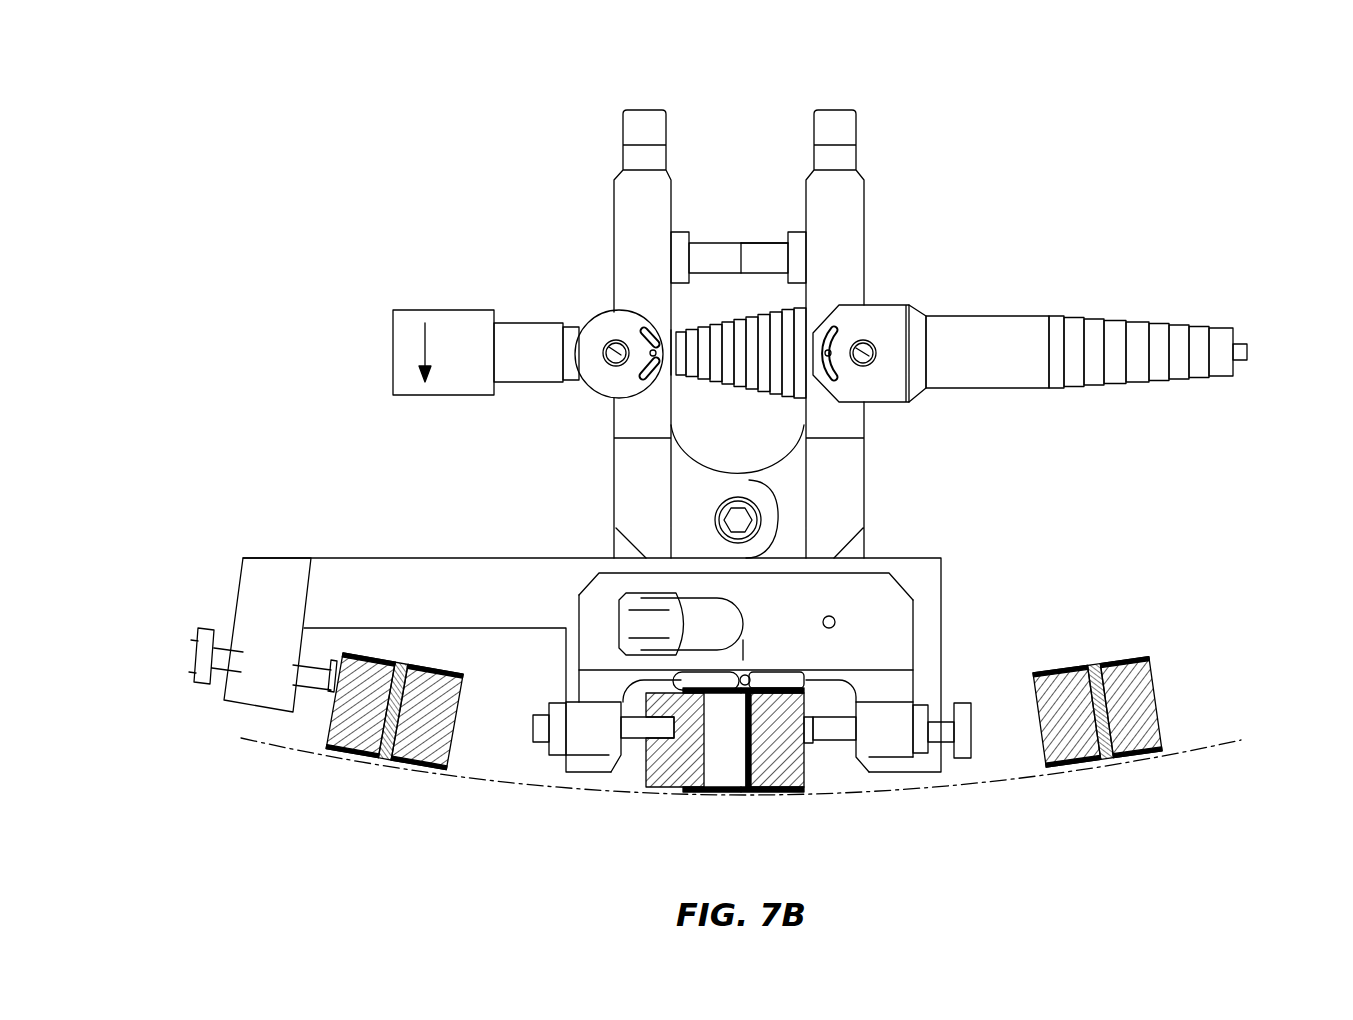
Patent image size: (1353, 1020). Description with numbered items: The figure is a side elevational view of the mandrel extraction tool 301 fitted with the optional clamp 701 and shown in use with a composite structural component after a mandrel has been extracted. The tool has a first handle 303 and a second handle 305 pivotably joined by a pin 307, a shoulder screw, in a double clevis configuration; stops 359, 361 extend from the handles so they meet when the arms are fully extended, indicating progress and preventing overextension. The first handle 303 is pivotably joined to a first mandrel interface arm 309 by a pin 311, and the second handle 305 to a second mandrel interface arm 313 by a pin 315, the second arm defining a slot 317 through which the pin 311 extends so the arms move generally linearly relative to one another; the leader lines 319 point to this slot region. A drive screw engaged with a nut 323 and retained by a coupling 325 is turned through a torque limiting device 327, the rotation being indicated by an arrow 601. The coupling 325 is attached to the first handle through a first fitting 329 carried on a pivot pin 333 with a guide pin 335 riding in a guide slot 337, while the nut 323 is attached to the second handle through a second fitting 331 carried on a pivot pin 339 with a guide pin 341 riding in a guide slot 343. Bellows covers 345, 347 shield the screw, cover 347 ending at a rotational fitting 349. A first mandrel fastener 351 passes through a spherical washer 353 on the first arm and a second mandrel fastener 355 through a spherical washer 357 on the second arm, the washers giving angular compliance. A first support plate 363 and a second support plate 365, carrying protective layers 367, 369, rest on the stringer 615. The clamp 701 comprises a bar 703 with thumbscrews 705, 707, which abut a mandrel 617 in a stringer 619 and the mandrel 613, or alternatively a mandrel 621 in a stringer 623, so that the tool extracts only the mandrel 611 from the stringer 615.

The mandrel extraction tool 301 is at (1112, 130).
The first handle 303 is at (630, 200).
The second handle 305 is at (850, 185).
The pin 307 is at (745, 527).
The first mandrel interface arm 309 is at (563, 628).
The pin 311 is at (642, 618).
The second mandrel interface arm 313 is at (902, 643).
The pin 315 is at (834, 622).
The slot 317 is at (705, 597).
The slot end 319 is at (640, 590).
The nut 323 is at (995, 330).
The coupling 325 is at (507, 330).
The torque limiting device 327 is at (403, 367).
The first fitting 329 is at (588, 380).
The second fitting 331 is at (878, 390).
The pivot pin 333 is at (606, 343).
The guide pin 335 is at (664, 330).
The guide slot 337 is at (642, 332).
The pivot pin 339 is at (872, 345).
The guide pin 341 is at (792, 378).
The guide slot 343 is at (868, 343).
The cover 345 is at (692, 352).
The cover 347 is at (1115, 365).
The rotational fitting 349 is at (1245, 345).
The first mandrel fastener 351 is at (648, 732).
The spherical washer 353 is at (553, 740).
The second mandrel fastener 355 is at (830, 729).
The spherical washer 357 is at (922, 729).
The stop 359 is at (703, 258).
The stop 361 is at (773, 258).
The first support plate 363 is at (740, 640).
The second support plate 365 is at (848, 688).
The protective layer 367 is at (712, 675).
The protective layer 369 is at (787, 676).
The arrow 601 is at (424, 312).
The mandrel 611 is at (677, 775).
The mandrel 613 is at (788, 763).
The stringer 615 is at (737, 795).
The mandrel 617 is at (330, 754).
The stringer 619 is at (388, 770).
The mandrel 621 is at (1148, 750).
The stringer 623 is at (1105, 770).
The clamp 701 is at (255, 556).
The bar 703 is at (250, 597).
The thumbscrew 705 is at (200, 655).
The thumbscrew 707 is at (973, 740).